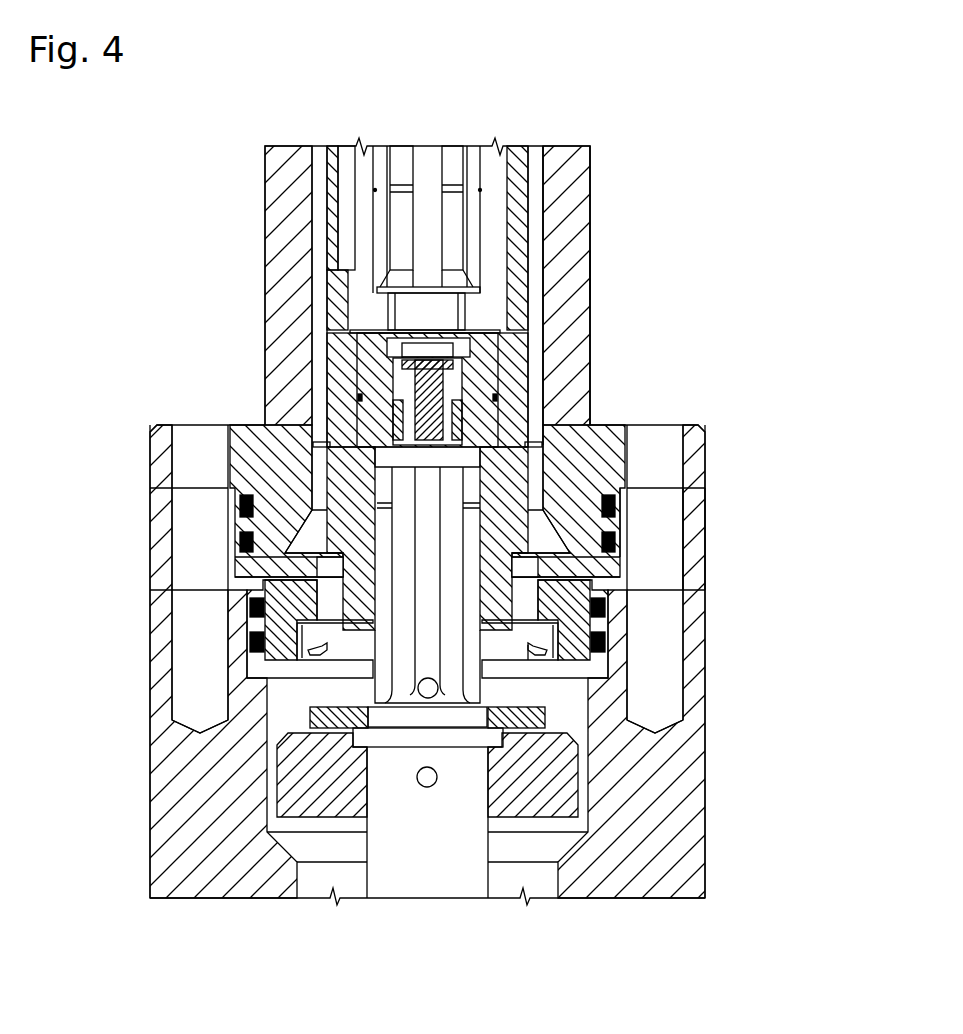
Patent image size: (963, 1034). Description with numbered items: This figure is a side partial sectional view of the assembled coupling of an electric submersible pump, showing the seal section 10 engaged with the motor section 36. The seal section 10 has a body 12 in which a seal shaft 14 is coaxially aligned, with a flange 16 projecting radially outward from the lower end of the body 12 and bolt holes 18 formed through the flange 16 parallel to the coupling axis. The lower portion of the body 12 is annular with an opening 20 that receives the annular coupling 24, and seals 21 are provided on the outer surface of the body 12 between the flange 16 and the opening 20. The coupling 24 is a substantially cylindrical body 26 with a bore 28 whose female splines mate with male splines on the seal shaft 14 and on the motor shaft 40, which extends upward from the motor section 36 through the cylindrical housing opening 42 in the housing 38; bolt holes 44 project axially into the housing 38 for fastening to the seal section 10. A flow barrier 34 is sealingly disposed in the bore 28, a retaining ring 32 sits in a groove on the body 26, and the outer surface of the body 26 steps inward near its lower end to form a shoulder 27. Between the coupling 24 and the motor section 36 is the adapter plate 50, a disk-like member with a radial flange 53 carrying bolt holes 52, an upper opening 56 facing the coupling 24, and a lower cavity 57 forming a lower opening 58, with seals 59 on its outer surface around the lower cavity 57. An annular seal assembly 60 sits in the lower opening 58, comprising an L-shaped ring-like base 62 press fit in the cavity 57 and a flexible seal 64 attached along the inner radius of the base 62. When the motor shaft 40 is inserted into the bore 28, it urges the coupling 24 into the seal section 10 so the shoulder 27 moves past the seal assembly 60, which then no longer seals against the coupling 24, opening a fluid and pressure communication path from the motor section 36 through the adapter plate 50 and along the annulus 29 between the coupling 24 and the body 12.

The seal section 10 is at (598, 110).
The body 12 is at (580, 205).
The seal shaft 14 is at (405, 165).
The flange 16 is at (698, 450).
The bolt holes 18 is at (636, 463).
The opening 20 is at (543, 548).
The seals 21 is at (195, 538).
The annular coupling 24 is at (640, 275).
The cylindrical body 26 is at (580, 368).
The shoulder 27 is at (330, 553).
The bore 28 is at (457, 600).
The annulus 29 is at (537, 170).
The retaining ring 32 is at (317, 447).
The flow barrier 34 is at (377, 383).
The motor section 36 is at (120, 866).
The housing 38 is at (150, 830).
The motor shaft 40 is at (408, 834).
The housing opening 42 is at (235, 560).
The bolt holes 44 is at (636, 671).
The adapter plate 50 is at (755, 550).
The bolt holes 52 is at (636, 544).
The radial flange 53 is at (705, 510).
The upper opening 56 is at (317, 503).
The lower cavity 57 is at (307, 641).
The lower opening 58 is at (305, 673).
The seals 59 is at (218, 648).
The annular seal assembly 60 is at (553, 680).
The base 62 is at (560, 680).
The flexible seal 64 is at (530, 650).